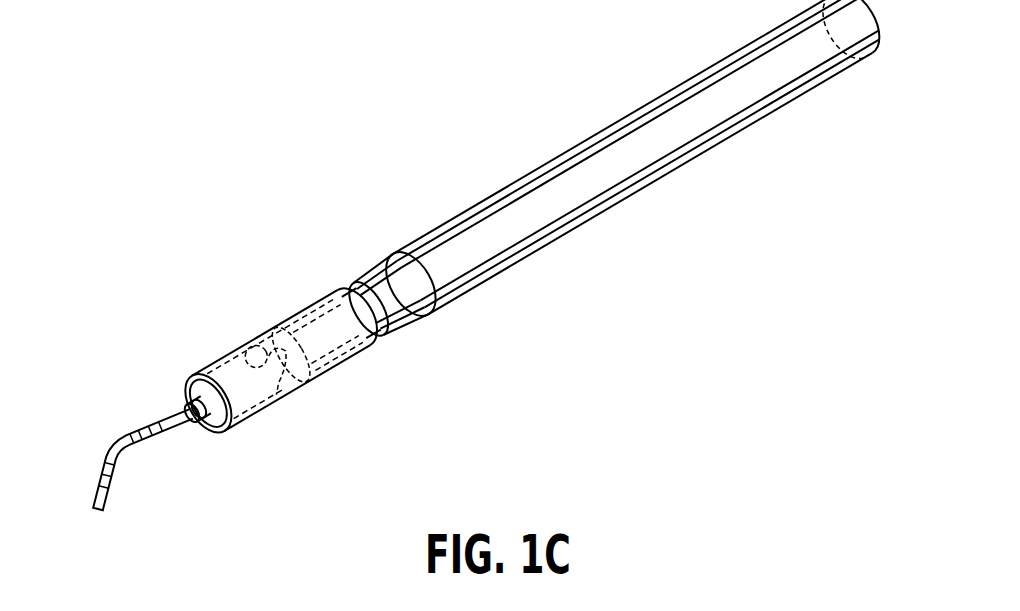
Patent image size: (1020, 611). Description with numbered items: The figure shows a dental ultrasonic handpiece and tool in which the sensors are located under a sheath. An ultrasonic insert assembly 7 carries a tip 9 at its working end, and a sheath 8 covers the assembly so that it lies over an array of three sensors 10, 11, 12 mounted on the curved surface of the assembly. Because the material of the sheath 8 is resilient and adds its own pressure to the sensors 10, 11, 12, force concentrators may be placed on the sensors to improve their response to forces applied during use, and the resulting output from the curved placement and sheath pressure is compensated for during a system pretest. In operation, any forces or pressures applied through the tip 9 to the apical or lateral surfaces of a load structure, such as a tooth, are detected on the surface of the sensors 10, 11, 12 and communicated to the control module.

The ultrasonic insert assembly 7 is at (597, 163).
The sheath 8 is at (222, 378).
The tip 9 is at (100, 493).
The sensor 10 is at (281, 348).
The sensor 11 is at (252, 349).
The sensor 12 is at (300, 383).